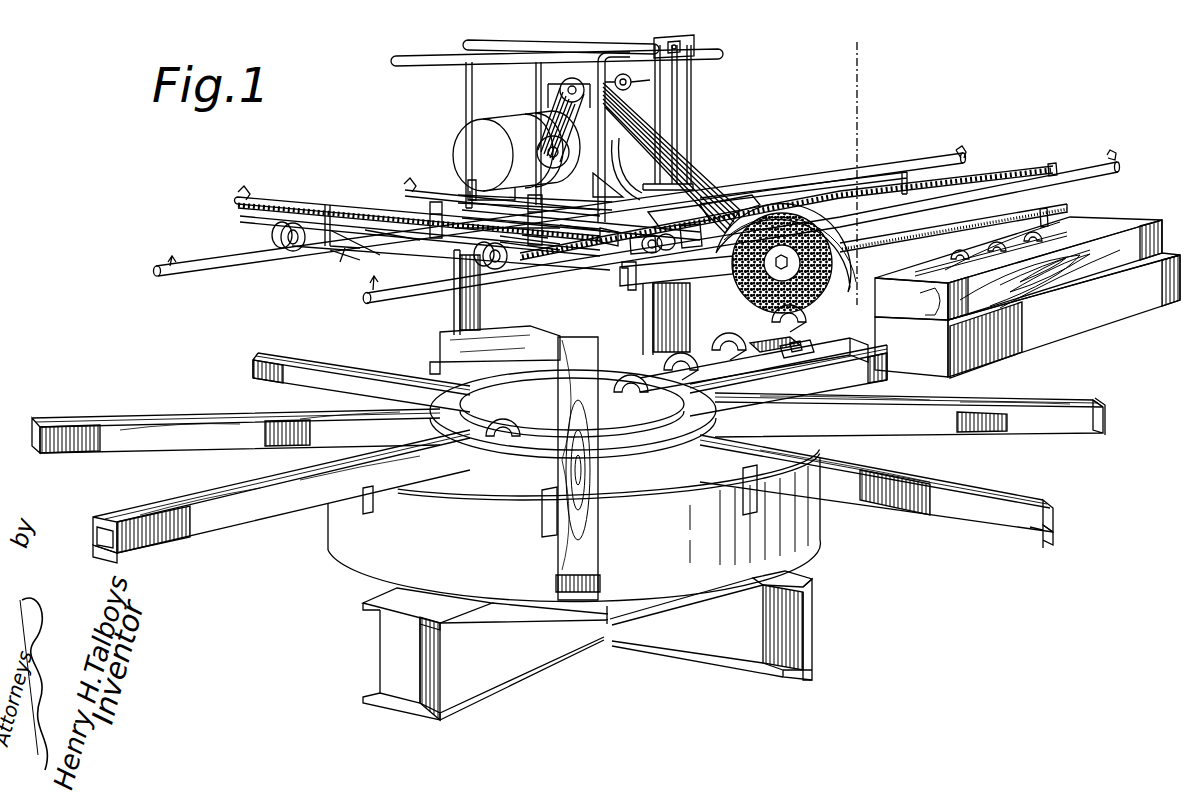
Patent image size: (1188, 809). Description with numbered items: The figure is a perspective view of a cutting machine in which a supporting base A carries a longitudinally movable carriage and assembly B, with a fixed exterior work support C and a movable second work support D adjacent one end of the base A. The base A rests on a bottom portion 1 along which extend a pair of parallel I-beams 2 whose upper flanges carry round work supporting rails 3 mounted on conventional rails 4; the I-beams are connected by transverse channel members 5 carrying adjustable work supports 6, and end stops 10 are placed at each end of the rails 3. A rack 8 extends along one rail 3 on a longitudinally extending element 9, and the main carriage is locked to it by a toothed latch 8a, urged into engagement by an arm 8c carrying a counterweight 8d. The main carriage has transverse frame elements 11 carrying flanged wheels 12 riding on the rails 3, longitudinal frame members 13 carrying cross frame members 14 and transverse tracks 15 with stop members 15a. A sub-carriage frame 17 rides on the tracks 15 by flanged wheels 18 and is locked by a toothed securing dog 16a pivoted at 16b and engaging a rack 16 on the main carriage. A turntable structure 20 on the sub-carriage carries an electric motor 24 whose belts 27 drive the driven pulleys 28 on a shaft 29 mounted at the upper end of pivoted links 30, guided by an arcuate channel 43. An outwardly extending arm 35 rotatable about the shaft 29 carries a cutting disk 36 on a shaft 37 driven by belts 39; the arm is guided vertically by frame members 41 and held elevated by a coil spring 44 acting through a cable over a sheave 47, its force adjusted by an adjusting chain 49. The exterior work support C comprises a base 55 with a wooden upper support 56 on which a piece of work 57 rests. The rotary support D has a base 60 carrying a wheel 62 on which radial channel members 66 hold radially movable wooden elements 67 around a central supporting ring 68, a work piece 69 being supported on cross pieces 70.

The bottom portion 1 is at (442, 368).
The I-beams 2 is at (454, 316).
The work supporting rails 3 is at (215, 275).
The conventional rails 4 is at (836, 190).
The transversely extending members 5 is at (470, 342).
The work supports 6 is at (846, 50).
The rack 8 is at (987, 182).
The toothed latch 8a is at (612, 248).
The arm 8c is at (646, 254).
The counterweight 8d is at (692, 246).
The longitudinally extending element 9 is at (627, 286).
The end stops 10 is at (172, 258).
The transversely extending frame elements 11 is at (352, 254).
The flanged wheels 12 is at (292, 252).
The longitudinal extending frame members 13 is at (335, 248).
The cross frame members 14 is at (256, 222).
The transversely extending tracks 15 is at (300, 200).
The stop members 15a is at (242, 188).
The rack 16 is at (266, 200).
The toothed securing dog 16a is at (470, 182).
The pivot 16b is at (515, 262).
The sub-carriage frame 17 is at (578, 232).
The flanged wheels 18 is at (436, 200).
The turntable structure 20 is at (457, 101).
The motor 24 is at (462, 130).
The belts 27 is at (558, 92).
The driven pulleys 28 is at (556, 77).
The shaft 29 is at (574, 85).
The links 30 is at (632, 86).
The arm 35 is at (708, 170).
The cutting disk 36 is at (786, 210).
The shaft 37 is at (768, 270).
The belts 39 is at (718, 190).
The vertical frame members 41 is at (690, 80).
The arcuate channel 43 is at (612, 62).
The coil spring 44 is at (540, 47).
The sheave 47 is at (690, 45).
The adjusting chain 49 is at (474, 70).
The base 55 is at (1143, 300).
The upper support 56 is at (1060, 300).
The piece of work 57 is at (1060, 234).
The base 60 is at (380, 640).
The wheel 62 is at (366, 560).
The channel members 66 is at (252, 368).
The radially extending elements 67 is at (316, 370).
The central supporting ring 68 is at (500, 395).
The work piece 69 is at (760, 332).
The cross pieces 70 is at (820, 360).
The supporting base A is at (880, 156).
The carriage and assembly B is at (706, 113).
The work support C is at (1133, 218).
The second work support D is at (584, 662).